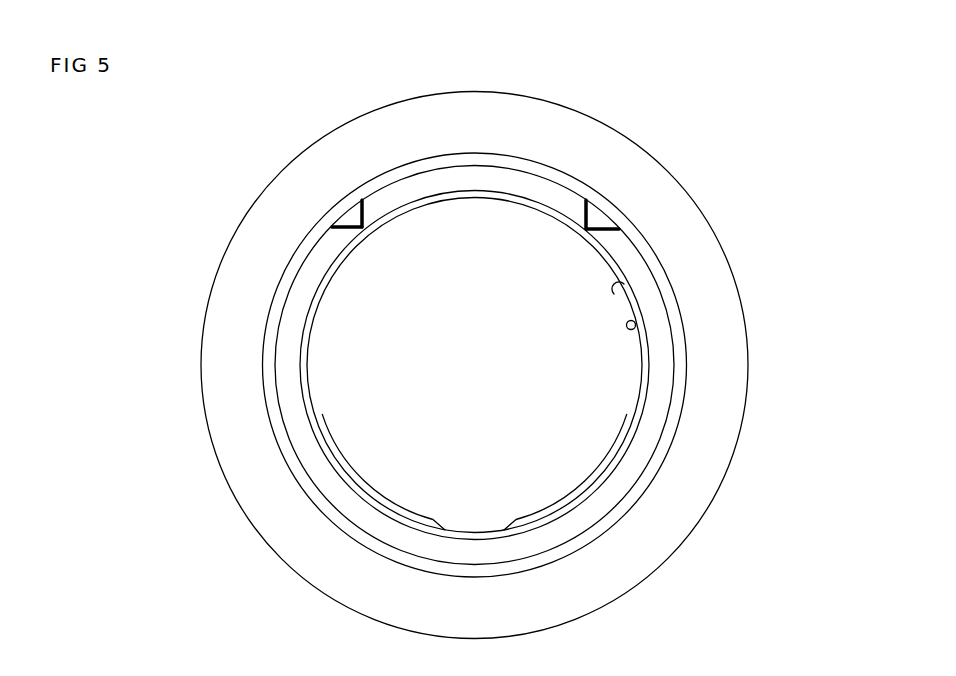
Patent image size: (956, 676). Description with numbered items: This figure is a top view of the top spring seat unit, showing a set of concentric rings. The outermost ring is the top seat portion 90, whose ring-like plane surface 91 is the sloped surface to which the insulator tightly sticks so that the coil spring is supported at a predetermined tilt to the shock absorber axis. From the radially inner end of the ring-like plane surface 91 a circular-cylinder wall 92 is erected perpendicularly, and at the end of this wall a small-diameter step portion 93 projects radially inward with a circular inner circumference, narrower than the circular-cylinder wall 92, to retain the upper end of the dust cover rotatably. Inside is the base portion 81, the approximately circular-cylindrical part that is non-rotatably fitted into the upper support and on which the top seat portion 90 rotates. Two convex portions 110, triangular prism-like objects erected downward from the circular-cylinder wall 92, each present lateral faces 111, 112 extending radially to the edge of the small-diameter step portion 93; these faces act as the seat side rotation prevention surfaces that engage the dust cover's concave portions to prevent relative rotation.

The top seat portion 90 is at (749, 340).
The ring-like plane surface 91 is at (705, 446).
The circular-cylinder wall 92 is at (683, 381).
The base portion 81 is at (636, 326).
The small-diameter step portion 93 is at (623, 300).
The convex portion 110 is at (352, 215).
The lateral face 111 is at (368, 208).
The lateral face 112 is at (335, 230).